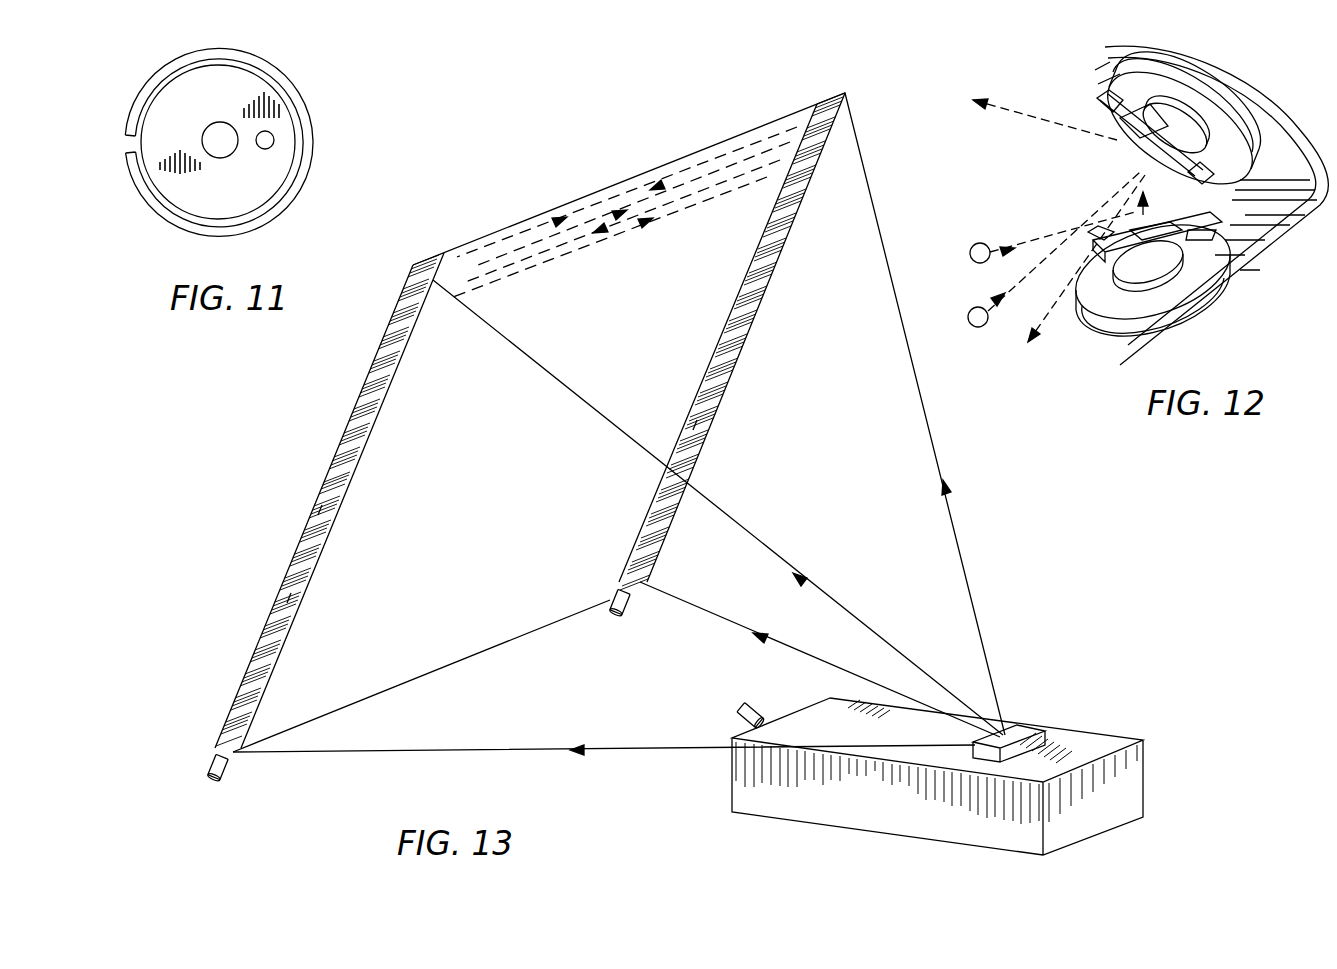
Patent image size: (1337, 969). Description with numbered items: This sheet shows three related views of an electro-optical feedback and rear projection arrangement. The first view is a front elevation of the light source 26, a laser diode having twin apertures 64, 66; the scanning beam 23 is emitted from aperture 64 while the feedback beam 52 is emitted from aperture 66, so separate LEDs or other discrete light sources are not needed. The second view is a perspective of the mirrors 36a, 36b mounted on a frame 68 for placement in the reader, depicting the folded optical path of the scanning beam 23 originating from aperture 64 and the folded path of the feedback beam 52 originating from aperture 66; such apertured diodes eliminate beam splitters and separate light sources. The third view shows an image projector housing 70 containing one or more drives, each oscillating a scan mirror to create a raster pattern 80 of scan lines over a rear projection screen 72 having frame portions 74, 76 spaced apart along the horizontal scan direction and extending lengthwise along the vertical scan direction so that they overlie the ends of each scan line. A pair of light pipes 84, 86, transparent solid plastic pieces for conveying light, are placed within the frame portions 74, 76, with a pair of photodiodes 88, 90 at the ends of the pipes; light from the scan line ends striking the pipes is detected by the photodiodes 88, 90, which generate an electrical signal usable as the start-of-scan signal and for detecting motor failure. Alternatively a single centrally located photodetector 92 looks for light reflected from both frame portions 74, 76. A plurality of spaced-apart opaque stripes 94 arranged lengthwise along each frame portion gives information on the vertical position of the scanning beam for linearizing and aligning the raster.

In FIG. 11, the light source 26 is at (308, 101).
In FIG. 11, the aperture 64 is at (202, 136).
In FIG. 12, the aperture 64 is at (970, 252).
In FIG. 11, the aperture 66 is at (270, 150).
In FIG. 12, the aperture 66 is at (968, 318).
In FIG. 12, the frame 68 is at (1277, 243).
In FIG. 12, the mirror 36a is at (1178, 250).
In FIG. 12, the mirror 36b is at (1163, 140).
In FIG. 12, the scanning beam 23 is at (1010, 106).
In FIG. 13, the scanning beam 23 is at (823, 593).
In FIG. 12, the feedback beam 52 is at (1043, 322).
In FIG. 13, the image projector housing 70 is at (1075, 747).
In FIG. 13, the rear projection screen 72 is at (673, 165).
In FIG. 13, the frame portion 74 is at (352, 423).
In FIG. 13, the frame portion 76 is at (767, 273).
In FIG. 13, the raster pattern 80 is at (573, 208).
In FIG. 13, the light pipe 84 is at (287, 603).
In FIG. 13, the light pipe 86 is at (693, 430).
In FIG. 13, the photodiode 88 is at (227, 773).
In FIG. 13, the photodiode 90 is at (613, 630).
In FIG. 13, the photodetector 92 is at (740, 705).
In FIG. 13, the opaque stripes 94 is at (318, 515).